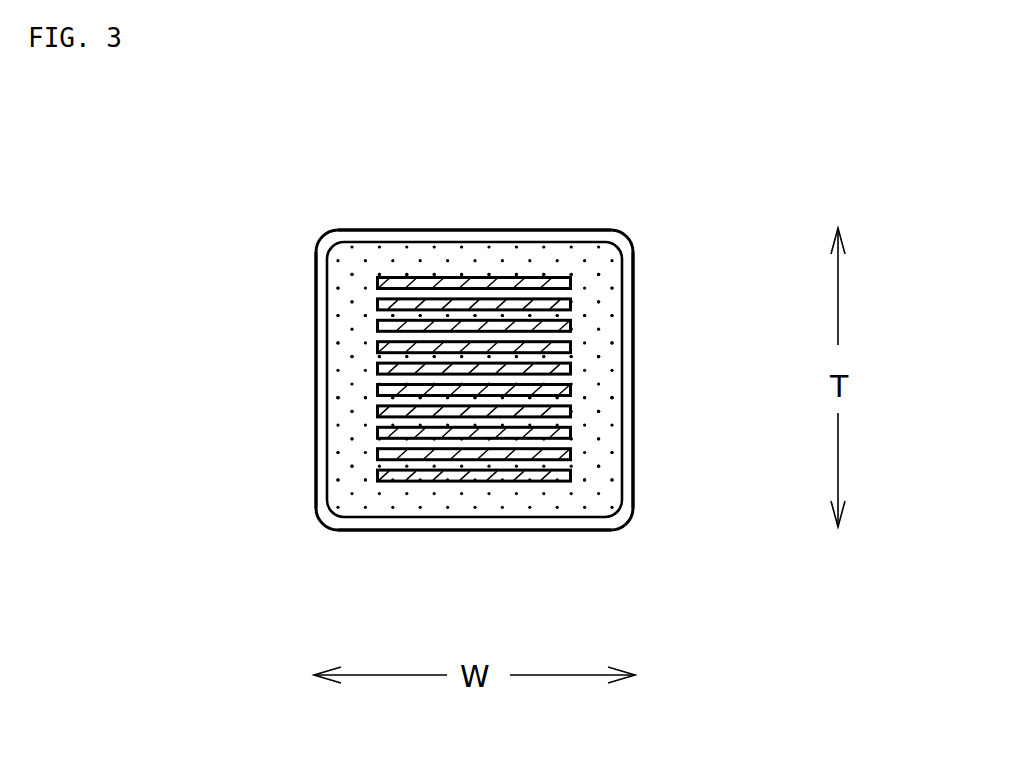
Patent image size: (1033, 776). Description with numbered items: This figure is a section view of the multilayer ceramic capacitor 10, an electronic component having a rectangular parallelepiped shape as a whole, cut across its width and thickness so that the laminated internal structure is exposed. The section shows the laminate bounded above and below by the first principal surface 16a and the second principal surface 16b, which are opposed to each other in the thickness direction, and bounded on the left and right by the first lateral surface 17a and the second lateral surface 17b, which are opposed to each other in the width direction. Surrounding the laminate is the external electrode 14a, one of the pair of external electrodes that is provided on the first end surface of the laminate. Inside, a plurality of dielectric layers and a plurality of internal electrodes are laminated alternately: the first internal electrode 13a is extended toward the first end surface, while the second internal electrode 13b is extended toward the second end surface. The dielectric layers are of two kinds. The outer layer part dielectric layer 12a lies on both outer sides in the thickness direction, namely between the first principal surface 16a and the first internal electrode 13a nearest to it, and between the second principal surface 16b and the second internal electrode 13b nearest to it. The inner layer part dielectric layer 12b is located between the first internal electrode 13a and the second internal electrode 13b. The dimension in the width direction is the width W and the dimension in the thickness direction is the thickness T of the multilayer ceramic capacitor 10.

The multilayer ceramic capacitor 10 is at (606, 197).
The outer layer part dielectric layer 12a is at (428, 263).
The inner layer part dielectric layer 12b is at (490, 297).
The first internal electrode 13a is at (550, 308).
The second internal electrode 13b is at (557, 443).
The external electrode 14a is at (316, 415).
The first principal surface 16a is at (363, 228).
The second principal surface 16b is at (473, 533).
The first lateral surface 17a is at (316, 323).
The second lateral surface 17b is at (633, 330).